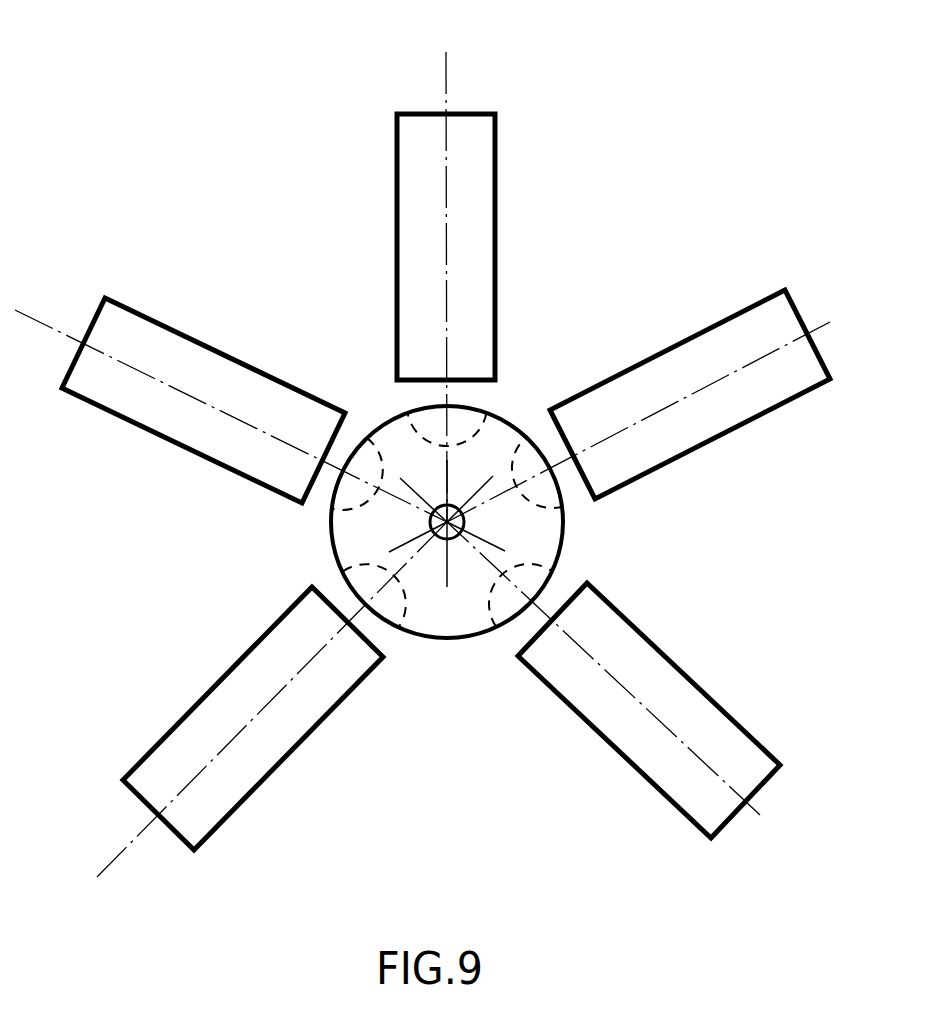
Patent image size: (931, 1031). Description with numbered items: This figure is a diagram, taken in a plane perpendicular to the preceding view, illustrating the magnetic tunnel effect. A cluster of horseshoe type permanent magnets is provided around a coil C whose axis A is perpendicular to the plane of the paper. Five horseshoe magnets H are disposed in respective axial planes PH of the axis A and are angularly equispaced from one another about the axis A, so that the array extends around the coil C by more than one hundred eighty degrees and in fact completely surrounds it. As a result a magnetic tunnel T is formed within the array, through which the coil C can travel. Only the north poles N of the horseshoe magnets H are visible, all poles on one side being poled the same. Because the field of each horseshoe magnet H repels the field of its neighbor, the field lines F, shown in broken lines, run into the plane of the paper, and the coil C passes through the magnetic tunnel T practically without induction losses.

The horseshoe magnet H is at (482, 167).
The axial plane PH is at (445, 62).
The north pole N is at (441, 495).
The coil C is at (470, 637).
The magnetic tunnel T is at (322, 535).
The magnetic field lines F is at (400, 630).
The axis A is at (453, 503).